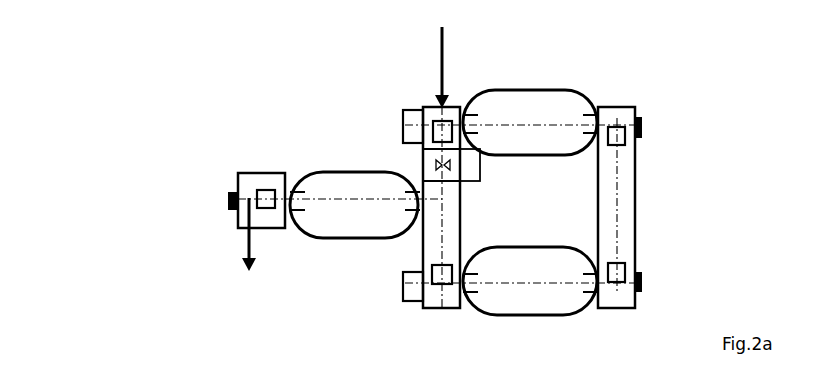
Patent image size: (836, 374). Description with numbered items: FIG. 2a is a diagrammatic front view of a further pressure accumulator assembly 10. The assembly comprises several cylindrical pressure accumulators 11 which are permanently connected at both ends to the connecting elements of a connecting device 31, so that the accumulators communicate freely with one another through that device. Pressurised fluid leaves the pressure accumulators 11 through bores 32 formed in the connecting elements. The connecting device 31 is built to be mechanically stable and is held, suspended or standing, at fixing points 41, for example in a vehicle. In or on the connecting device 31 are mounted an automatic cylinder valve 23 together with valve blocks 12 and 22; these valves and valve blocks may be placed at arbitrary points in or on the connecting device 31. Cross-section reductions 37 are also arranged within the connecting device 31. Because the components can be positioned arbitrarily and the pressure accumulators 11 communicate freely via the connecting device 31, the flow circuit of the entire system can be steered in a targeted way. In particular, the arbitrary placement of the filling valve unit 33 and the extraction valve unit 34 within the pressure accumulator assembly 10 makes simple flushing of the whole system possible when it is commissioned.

The pressure accumulator assembly 10 is at (124, 266).
The pressure accumulator 11 is at (444, 202).
The valve block 12 is at (264, 165).
The valve block 22 is at (409, 100).
The automatic cylinder valve 23 is at (249, 178).
The connecting device 31 is at (591, 227).
The bore 32 is at (463, 181).
The filling valve unit 33 is at (452, 50).
The extraction valve unit 34 is at (240, 247).
The cross-section reduction 37 is at (425, 162).
The fixing point 41 is at (282, 182).